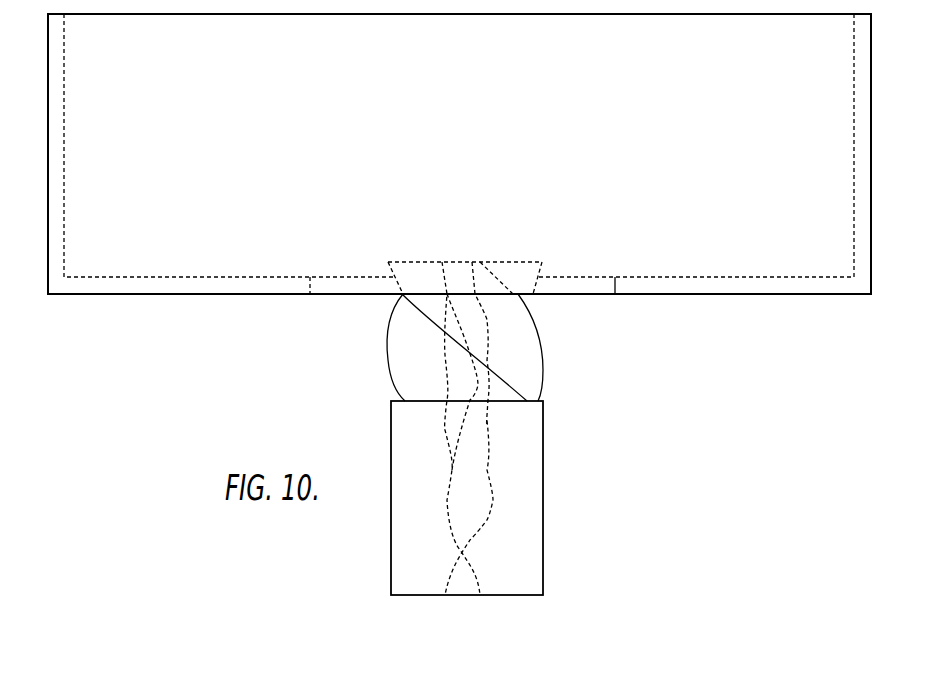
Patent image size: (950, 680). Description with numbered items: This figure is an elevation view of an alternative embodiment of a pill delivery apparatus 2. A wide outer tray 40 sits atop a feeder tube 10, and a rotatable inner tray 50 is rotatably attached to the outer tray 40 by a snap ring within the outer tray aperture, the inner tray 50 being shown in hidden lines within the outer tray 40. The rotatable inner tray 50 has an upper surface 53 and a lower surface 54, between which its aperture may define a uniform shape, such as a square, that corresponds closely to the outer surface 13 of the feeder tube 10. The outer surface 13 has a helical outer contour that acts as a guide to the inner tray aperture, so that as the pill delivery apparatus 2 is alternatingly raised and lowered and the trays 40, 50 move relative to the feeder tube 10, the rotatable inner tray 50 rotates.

The outer tray 40 is at (197, 294).
The rotatable inner tray 50 is at (335, 287).
The upper surface 53 is at (558, 277).
The lower surface 54 is at (548, 294).
The pill delivery apparatus 2 is at (548, 368).
The outer surface 13 is at (538, 388).
The feeder tube 10 is at (543, 457).